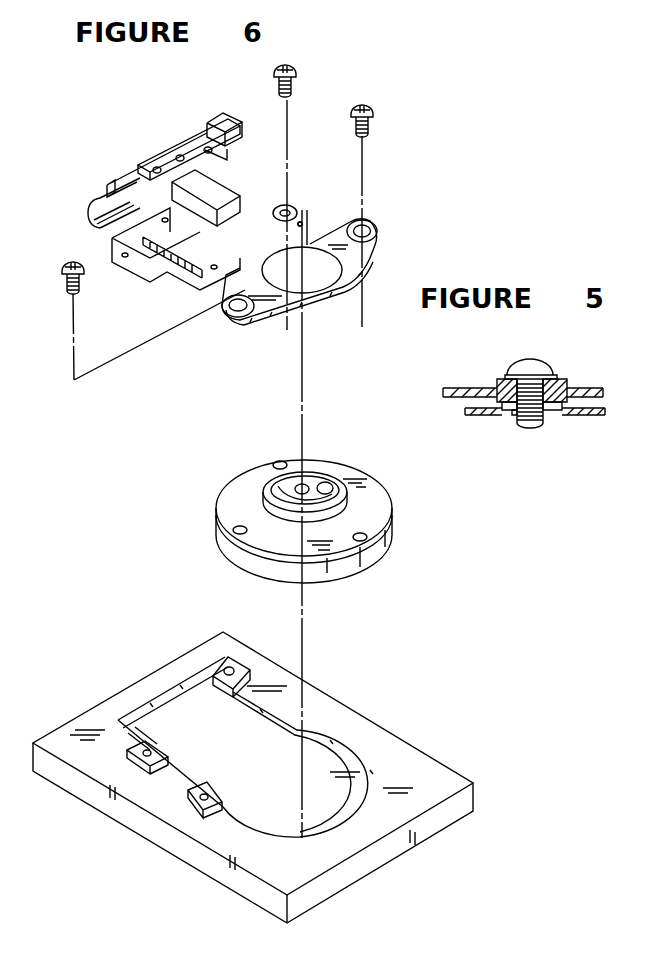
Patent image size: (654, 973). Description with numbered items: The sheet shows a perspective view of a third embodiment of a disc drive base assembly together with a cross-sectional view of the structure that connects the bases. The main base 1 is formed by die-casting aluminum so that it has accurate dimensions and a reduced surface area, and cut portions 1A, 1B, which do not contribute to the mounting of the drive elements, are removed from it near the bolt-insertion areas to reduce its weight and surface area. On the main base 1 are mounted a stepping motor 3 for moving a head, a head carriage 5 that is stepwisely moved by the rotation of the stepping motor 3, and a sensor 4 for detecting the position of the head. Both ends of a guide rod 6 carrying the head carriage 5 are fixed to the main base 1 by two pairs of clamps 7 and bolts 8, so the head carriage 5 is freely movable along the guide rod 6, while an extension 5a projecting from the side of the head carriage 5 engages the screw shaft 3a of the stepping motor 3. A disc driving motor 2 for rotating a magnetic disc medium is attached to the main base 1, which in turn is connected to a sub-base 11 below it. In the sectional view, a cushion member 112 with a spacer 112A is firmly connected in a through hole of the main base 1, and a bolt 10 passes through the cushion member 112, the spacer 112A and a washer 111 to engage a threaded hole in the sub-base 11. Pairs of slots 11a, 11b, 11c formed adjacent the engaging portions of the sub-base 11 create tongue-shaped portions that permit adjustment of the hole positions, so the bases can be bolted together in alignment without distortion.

In FIG. 6, the main base 1 is at (102, 253).
In FIG. 5, the main base 1 is at (577, 392).
In FIG. 6, the cut portion 1A is at (332, 240).
In FIG. 6, the cut portion 1B is at (203, 297).
In FIG. 6, the disc driving motor 2 is at (372, 486).
In FIG. 6, the stepping motor 3 is at (95, 210).
In FIG. 6, the screw shaft 3a is at (173, 277).
In FIG. 6, the sensor 4 is at (216, 118).
In FIG. 6, the head carriage 5 is at (193, 173).
In FIG. 6, the extension 5a is at (150, 257).
In FIG. 6, the guide rod 6 is at (280, 207).
In FIG. 6, the clamp 7 is at (300, 222).
In FIG. 6, the bolt 8 is at (314, 194).
In FIG. 6, the bolt 10 is at (296, 76).
In FIG. 5, the bolt 10 is at (512, 370).
In FIG. 6, the sub-base 11 is at (370, 716).
In FIG. 5, the sub-base 11 is at (593, 413).
In FIG. 6, the slot 11a is at (243, 660).
In FIG. 6, the slot 11b is at (133, 755).
In FIG. 6, the slot 11c is at (193, 793).
In FIG. 5, the washer 111 is at (552, 377).
In FIG. 5, the cushion member 112 is at (570, 412).
In FIG. 5, the spacer 112A is at (518, 412).